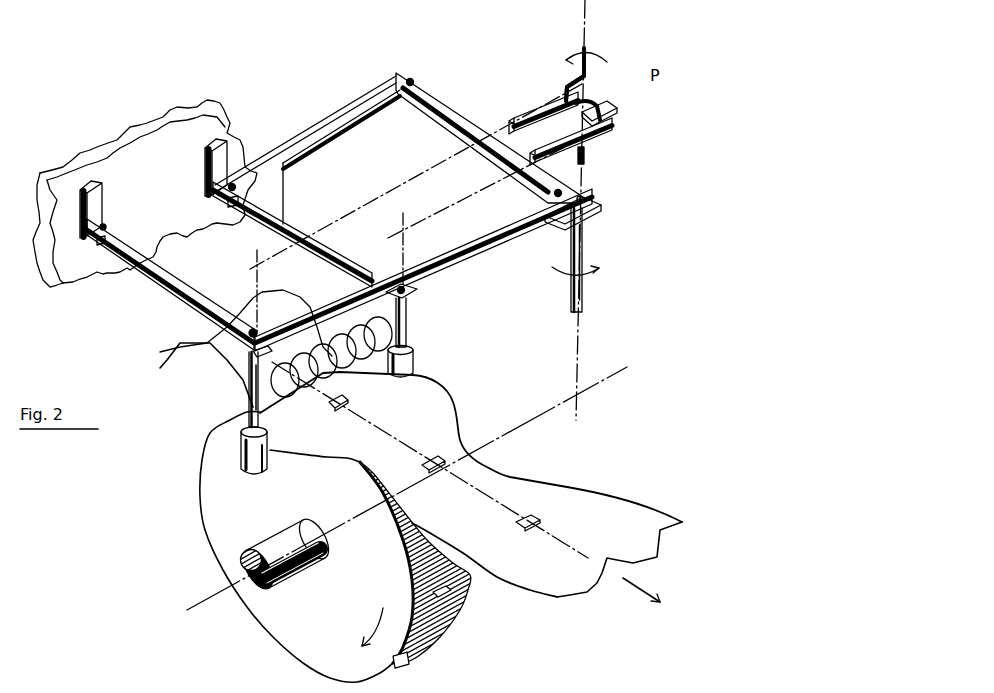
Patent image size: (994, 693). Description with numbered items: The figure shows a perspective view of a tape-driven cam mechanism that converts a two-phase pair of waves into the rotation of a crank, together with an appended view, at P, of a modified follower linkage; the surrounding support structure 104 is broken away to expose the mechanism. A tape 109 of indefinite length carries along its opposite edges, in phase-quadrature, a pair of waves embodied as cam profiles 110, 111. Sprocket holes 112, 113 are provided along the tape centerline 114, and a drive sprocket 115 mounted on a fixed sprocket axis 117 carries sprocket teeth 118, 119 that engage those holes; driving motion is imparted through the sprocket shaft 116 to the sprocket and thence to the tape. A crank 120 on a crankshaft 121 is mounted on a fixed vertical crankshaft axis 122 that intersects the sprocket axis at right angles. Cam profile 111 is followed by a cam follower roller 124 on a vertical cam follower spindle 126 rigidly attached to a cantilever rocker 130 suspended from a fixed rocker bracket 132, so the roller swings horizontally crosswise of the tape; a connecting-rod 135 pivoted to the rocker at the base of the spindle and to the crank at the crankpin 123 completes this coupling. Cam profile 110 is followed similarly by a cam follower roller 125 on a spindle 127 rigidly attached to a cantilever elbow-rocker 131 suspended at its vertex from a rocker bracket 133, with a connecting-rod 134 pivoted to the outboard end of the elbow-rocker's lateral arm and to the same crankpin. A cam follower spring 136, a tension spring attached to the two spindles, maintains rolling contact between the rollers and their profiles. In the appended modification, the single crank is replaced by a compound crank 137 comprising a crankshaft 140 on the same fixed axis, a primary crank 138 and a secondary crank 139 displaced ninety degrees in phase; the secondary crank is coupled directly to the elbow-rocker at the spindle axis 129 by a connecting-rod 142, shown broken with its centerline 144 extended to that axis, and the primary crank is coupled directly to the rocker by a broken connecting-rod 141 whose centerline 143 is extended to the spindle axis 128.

The machine frame 104 is at (182, 396).
The tape 109 is at (658, 549).
The cam profile 110 is at (574, 488).
The cam profile 111 is at (513, 590).
The sprocket hole 112 is at (440, 457).
The sprocket hole 113 is at (527, 515).
The tape centerline 114 is at (476, 493).
The drive sprocket 115 is at (200, 517).
The sprocket shaft 116 is at (290, 585).
The sprocket axis 117 is at (199, 607).
The sprocket tooth 118 is at (350, 399).
The sprocket tooth 119 is at (409, 660).
The crank 120 is at (598, 198).
The crankshaft 121 is at (583, 248).
The crankshaft axis 122 is at (576, 354).
The crankpin 123 is at (581, 178).
The cam follower roller 124 is at (243, 472).
The cam follower roller 125 is at (413, 361).
The cam follower spindle 126 is at (247, 394).
The cam follower spindle 127 is at (410, 316).
The spindle axis 128 is at (256, 279).
The spindle axis 129 is at (407, 238).
The cantilever rocker 130 is at (172, 296).
The cantilever elbow-rocker 131 is at (285, 188).
The rocker bracket 132 is at (103, 196).
The rocker bracket 133 is at (205, 167).
The connecting-rod 134 is at (444, 127).
The connecting-rod 135 is at (470, 258).
The cam follower spring 136 is at (338, 336).
The compound crank 137 is at (590, 101).
The primary crank 138 is at (563, 83).
The secondary crank 139 is at (609, 109).
The crankshaft 140 is at (589, 52).
The connecting-rod 141 is at (531, 105).
The connecting-rod 142 is at (614, 123).
The centerline 143 is at (426, 173).
The centerline 144 is at (477, 192).